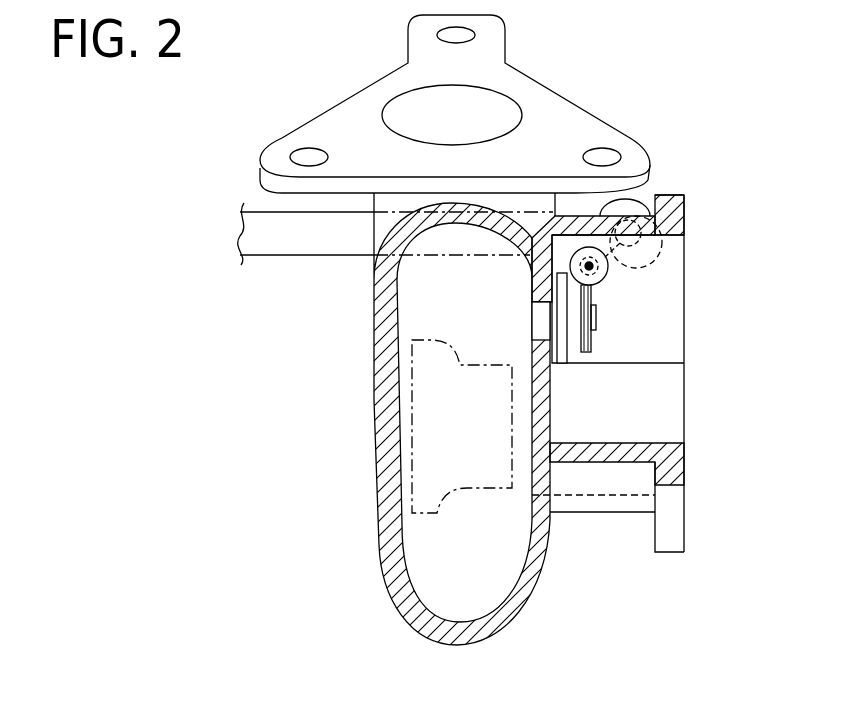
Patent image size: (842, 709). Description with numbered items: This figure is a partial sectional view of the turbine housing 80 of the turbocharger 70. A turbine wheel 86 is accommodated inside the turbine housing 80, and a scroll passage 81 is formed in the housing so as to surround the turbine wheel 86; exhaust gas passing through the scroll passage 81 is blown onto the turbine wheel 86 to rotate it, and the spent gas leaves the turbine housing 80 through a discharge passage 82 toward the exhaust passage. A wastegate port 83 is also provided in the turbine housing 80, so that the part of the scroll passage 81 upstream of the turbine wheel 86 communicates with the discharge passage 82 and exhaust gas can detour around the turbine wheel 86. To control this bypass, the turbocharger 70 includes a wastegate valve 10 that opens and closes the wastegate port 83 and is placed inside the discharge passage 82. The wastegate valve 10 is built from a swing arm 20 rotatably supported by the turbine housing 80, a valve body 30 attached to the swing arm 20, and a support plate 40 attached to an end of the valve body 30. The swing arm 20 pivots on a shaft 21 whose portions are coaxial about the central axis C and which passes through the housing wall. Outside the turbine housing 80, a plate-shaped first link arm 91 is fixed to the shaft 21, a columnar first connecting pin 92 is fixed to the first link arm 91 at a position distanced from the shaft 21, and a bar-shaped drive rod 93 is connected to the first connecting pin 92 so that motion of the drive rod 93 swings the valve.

The wastegate valve 10 is at (640, 317).
The swing arm 20 is at (607, 268).
The shaft 21 is at (535, 284).
The valve body 30 is at (567, 365).
The support plate 40 is at (590, 353).
The turbocharger 70 is at (645, 104).
The turbine housing 80 is at (378, 548).
The scroll passage 81 is at (515, 112).
The discharge passage 82 is at (640, 443).
The wastegate port 83 is at (531, 338).
The turbine wheel 86 is at (467, 493).
The first link arm 91 is at (622, 268).
The first connecting pin 92 is at (653, 243).
The drive rod 93 is at (272, 258).
The central axis C is at (531, 264).